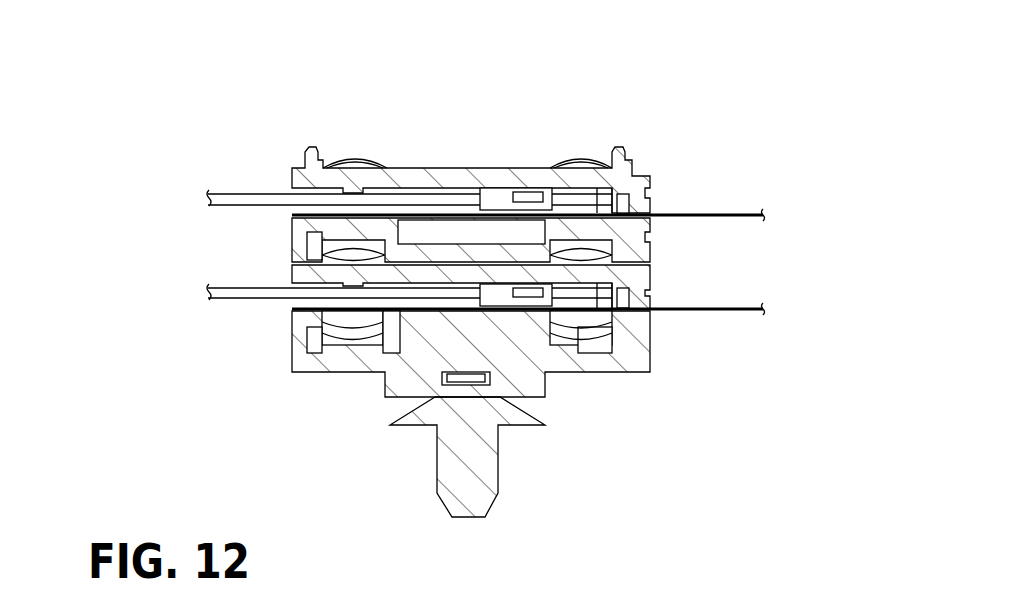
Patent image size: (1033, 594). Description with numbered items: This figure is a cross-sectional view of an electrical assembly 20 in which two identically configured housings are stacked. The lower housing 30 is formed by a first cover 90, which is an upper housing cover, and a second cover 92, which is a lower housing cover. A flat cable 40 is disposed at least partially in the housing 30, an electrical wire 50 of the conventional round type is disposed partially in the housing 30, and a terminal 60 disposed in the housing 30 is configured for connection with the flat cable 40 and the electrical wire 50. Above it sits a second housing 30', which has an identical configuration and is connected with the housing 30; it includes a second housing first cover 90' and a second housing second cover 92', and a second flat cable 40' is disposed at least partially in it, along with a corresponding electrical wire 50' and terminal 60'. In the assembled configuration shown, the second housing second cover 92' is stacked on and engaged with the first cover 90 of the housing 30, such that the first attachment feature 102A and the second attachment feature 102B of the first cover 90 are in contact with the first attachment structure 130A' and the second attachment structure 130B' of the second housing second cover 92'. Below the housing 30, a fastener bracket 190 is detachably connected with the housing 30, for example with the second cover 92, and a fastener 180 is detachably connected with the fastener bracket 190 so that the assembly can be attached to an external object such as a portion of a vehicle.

The electrical assembly 20 is at (186, 96).
The second housing 30' is at (382, 204).
The housing 30 is at (387, 354).
The second flat cable 40' is at (558, 185).
The flat cable 40 is at (528, 341).
The electrical wire of second housing 50' is at (373, 180).
The electrical wire 50 is at (350, 317).
The terminal of second housing 60' is at (545, 139).
The terminal 60 is at (570, 369).
The second housing first cover 90' is at (670, 145).
The first cover 90 is at (726, 300).
The second housing second cover 92' is at (702, 161).
The second cover 92 is at (664, 367).
The first attachment feature 102A is at (632, 253).
The second attachment feature 102B is at (300, 257).
The first attachment structure of second housing second cover 130A' is at (731, 210).
The second attachment structure of second housing second cover 130B' is at (221, 210).
The fastener 180 is at (442, 447).
The fastener bracket 190 is at (510, 372).